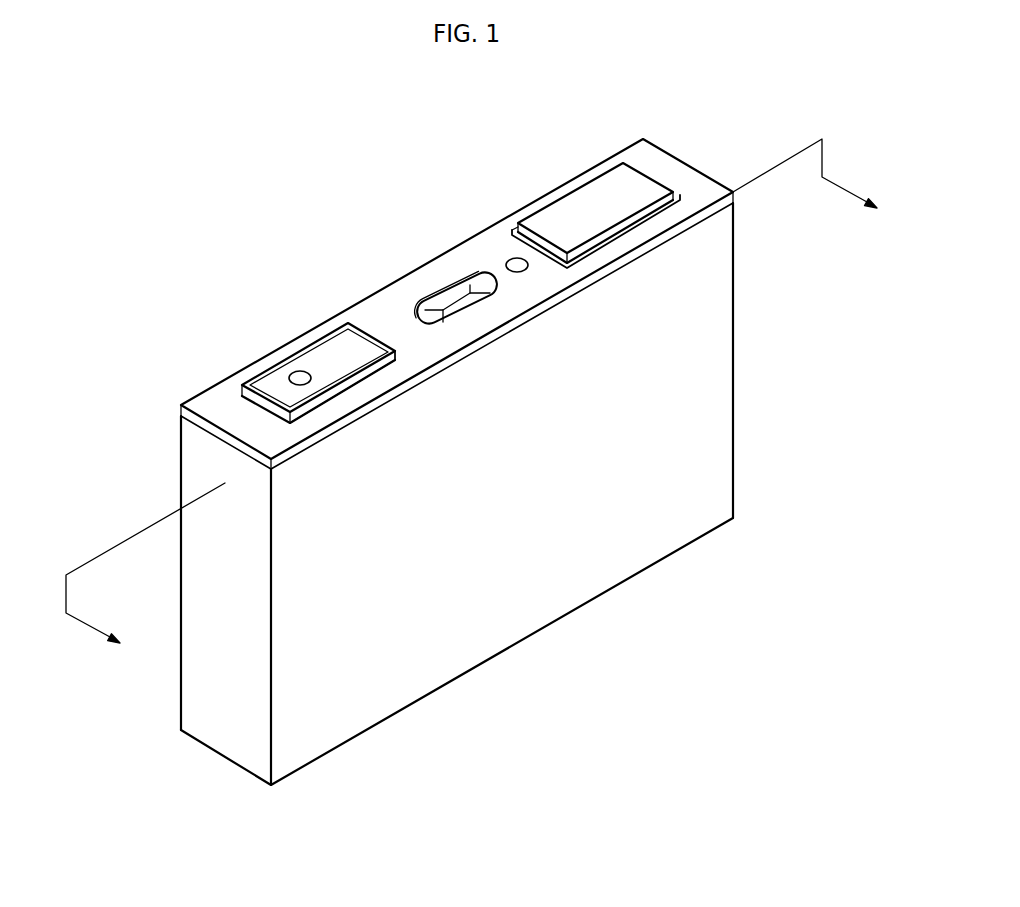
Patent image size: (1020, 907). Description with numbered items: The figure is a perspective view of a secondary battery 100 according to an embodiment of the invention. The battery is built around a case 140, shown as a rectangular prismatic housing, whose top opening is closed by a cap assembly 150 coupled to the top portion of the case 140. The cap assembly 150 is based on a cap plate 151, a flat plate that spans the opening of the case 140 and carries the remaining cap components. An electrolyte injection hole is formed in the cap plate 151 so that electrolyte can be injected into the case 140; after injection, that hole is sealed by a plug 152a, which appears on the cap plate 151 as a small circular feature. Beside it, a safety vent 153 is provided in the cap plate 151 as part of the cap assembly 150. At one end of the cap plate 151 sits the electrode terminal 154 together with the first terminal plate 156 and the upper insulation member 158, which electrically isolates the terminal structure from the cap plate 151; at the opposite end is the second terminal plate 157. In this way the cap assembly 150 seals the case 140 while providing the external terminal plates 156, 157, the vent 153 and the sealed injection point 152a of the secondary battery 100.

The secondary battery 100 is at (84, 88).
The case 140 is at (530, 613).
The cap assembly 150 is at (697, 132).
The cap plate 151 is at (217, 400).
The plug 152a is at (510, 257).
The safety vent 153 is at (437, 298).
The electrode terminal 154 is at (297, 372).
The first terminal plate 156 is at (328, 348).
The second terminal plate 157 is at (582, 202).
The upper insulation member 158 is at (398, 348).